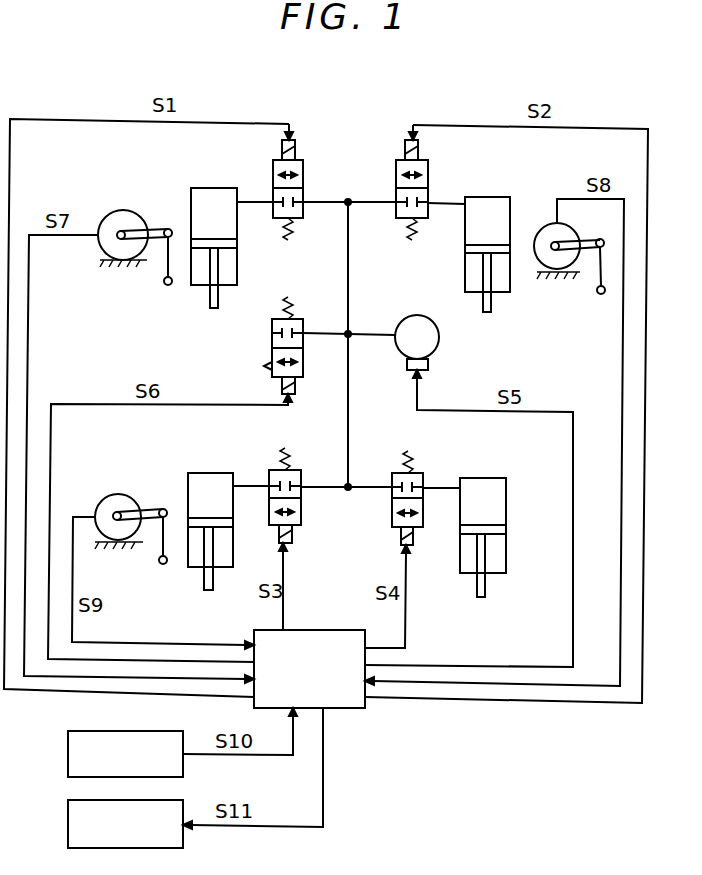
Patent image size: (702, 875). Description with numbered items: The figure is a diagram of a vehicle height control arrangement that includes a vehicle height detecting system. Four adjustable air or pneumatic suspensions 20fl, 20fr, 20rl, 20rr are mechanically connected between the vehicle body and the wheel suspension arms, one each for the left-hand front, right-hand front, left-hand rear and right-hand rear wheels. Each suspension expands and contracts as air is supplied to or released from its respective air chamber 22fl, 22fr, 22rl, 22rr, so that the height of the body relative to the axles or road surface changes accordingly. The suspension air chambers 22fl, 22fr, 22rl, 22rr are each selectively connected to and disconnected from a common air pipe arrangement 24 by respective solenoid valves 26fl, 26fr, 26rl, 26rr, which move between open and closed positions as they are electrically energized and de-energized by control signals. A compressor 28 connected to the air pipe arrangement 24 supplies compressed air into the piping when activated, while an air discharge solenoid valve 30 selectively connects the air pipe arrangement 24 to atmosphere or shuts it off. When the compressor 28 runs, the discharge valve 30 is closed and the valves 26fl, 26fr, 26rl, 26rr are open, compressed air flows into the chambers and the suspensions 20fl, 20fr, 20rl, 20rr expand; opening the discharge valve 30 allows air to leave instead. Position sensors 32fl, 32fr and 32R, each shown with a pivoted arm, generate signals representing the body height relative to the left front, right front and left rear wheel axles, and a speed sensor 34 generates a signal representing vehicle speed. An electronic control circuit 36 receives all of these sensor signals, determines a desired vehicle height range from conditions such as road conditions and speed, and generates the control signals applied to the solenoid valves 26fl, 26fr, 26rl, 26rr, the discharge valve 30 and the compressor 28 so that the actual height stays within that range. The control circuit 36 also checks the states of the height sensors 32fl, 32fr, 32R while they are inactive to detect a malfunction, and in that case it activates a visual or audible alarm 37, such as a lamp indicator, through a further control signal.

The air suspension 20fl is at (237, 258).
The air suspension 20fr is at (510, 268).
The air suspension 20rl is at (217, 473).
The air suspension 20rr is at (485, 478).
The suspension air chamber 22fl is at (214, 196).
The suspension air chamber 22fr is at (486, 208).
The suspension air chamber 22rl is at (193, 498).
The suspension air chamber 22rr is at (498, 507).
The air pipe arrangement 24 is at (350, 275).
The solenoid valve 26fl is at (303, 176).
The solenoid valve 26fr is at (428, 178).
The solenoid valve 26rl is at (301, 517).
The solenoid valve 26rr is at (392, 507).
The compressor 28 is at (439, 338).
The air discharge solenoid valve 30 is at (272, 343).
The position sensor 32fl is at (124, 211).
The position sensor 32fr is at (548, 221).
The position sensor 32R is at (104, 495).
The speed sensor 34 is at (68, 745).
The electronic control circuit 36 is at (353, 708).
The alarm 37 is at (68, 813).